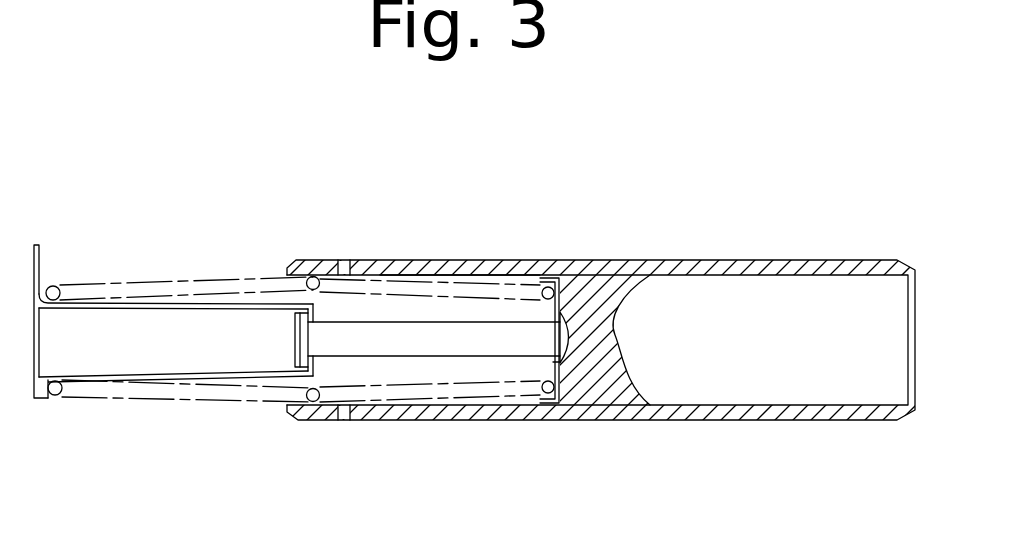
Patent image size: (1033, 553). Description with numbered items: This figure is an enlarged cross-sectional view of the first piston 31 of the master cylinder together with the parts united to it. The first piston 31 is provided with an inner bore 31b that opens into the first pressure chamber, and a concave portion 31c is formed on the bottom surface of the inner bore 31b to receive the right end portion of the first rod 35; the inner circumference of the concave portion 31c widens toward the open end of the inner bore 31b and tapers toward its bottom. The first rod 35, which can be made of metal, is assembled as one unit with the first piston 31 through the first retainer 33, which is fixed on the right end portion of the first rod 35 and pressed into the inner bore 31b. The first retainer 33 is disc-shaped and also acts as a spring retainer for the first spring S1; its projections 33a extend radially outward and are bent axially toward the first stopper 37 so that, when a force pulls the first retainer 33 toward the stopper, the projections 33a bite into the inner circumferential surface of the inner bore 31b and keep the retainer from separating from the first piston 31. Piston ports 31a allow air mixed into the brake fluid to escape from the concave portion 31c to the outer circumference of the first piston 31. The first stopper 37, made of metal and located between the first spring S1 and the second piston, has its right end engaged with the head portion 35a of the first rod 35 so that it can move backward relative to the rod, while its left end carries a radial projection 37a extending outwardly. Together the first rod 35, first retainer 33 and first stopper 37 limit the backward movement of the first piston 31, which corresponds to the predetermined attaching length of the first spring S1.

The first piston 31 is at (690, 413).
The piston ports 31a is at (343, 267).
The inner bore 31b is at (461, 286).
The concave portion 31c is at (556, 362).
The first retainer 33 is at (563, 367).
The projections 33a is at (541, 278).
The first rod 35 is at (448, 346).
The head portion 35a is at (300, 335).
The first stopper 37 is at (243, 377).
The radial projection 37a is at (40, 252).
The first spring S1 is at (152, 393).